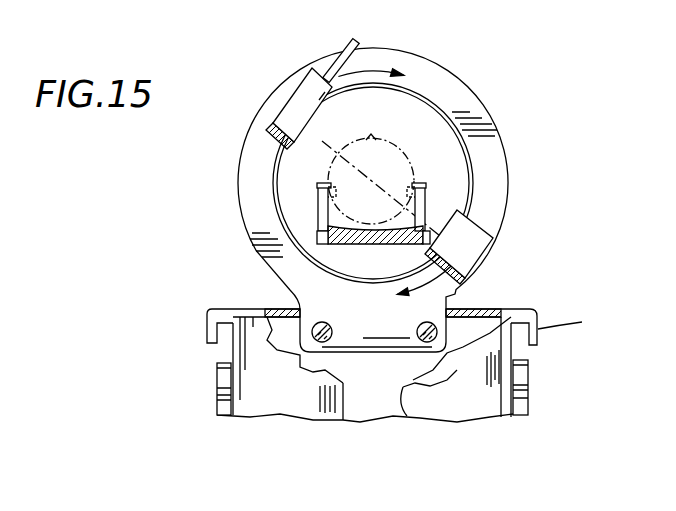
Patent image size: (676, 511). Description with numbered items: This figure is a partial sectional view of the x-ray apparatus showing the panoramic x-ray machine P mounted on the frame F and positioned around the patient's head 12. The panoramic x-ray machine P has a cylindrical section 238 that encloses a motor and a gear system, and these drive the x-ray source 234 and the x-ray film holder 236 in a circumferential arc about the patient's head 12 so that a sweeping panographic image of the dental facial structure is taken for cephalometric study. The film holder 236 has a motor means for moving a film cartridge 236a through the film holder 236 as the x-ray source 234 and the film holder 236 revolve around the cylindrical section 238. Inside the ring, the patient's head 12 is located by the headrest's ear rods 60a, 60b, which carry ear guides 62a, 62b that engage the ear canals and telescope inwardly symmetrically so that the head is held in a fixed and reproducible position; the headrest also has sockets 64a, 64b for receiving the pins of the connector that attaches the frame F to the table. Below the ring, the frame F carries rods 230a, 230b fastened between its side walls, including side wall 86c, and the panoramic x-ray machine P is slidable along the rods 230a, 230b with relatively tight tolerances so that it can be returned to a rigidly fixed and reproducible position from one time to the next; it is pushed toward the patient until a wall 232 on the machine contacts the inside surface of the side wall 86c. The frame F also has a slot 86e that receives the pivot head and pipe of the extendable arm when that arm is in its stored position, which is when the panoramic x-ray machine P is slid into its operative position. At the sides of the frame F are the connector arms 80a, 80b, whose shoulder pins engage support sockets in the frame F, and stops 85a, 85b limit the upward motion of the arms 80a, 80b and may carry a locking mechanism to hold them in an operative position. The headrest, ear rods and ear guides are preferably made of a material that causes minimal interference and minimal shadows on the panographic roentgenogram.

The patient's head 12 is at (391, 127).
The ear rod 60a is at (426, 203).
The ear rod 60b is at (317, 208).
The ear guide 62a is at (428, 179).
The ear guide 62b is at (316, 184).
The socket 64a is at (431, 246).
The socket 64b is at (316, 241).
The arm 80a is at (529, 406).
The arm 80b is at (216, 407).
The stop 85a is at (569, 326).
The stop 85b is at (206, 326).
The side wall 86c is at (313, 410).
The slot 86e is at (395, 403).
The rod 230a is at (432, 341).
The rod 230b is at (317, 341).
The wall 232 is at (384, 327).
The x-ray source 234 is at (472, 222).
The x-ray film holder 236 is at (291, 95).
The film cartridge 236a is at (360, 42).
The cylindrical section 238 is at (451, 68).
The frame F is at (485, 313).
The panoramic x-ray machine P is at (496, 118).